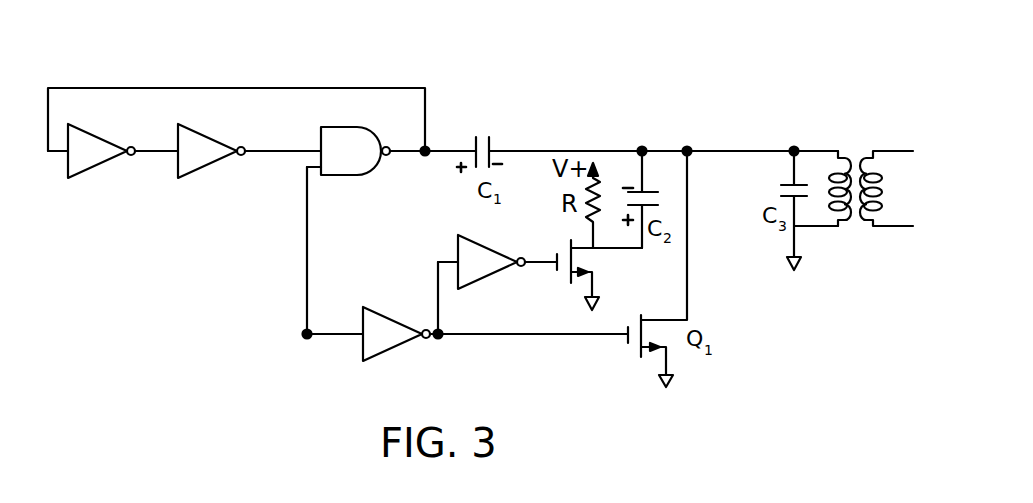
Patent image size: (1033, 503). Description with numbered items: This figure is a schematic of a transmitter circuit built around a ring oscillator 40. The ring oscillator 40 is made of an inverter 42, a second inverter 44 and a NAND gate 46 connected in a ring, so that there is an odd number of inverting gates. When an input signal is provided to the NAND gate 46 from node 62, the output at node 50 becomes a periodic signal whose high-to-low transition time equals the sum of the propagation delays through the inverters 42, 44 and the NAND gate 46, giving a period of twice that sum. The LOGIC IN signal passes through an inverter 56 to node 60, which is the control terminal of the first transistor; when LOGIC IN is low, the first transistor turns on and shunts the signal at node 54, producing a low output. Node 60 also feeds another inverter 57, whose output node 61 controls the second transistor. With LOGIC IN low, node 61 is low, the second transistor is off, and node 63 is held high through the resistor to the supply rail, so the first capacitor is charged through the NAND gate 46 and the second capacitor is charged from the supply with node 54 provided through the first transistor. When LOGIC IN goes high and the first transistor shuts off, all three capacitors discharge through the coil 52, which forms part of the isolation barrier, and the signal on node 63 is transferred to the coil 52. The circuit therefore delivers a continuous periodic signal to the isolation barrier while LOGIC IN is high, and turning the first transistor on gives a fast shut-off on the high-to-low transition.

The ring oscillator 40 is at (352, 69).
The inverter 42 is at (102, 135).
The inverter 44 is at (210, 135).
The NAND gate 46 is at (347, 125).
The node 50 is at (428, 147).
The coil 52 is at (845, 162).
The node 54 is at (807, 150).
The inverter 56 is at (373, 307).
The inverter 57 is at (482, 243).
The node 60 is at (533, 340).
The node 61 is at (540, 267).
The node 62 is at (303, 340).
The node 63 is at (618, 275).